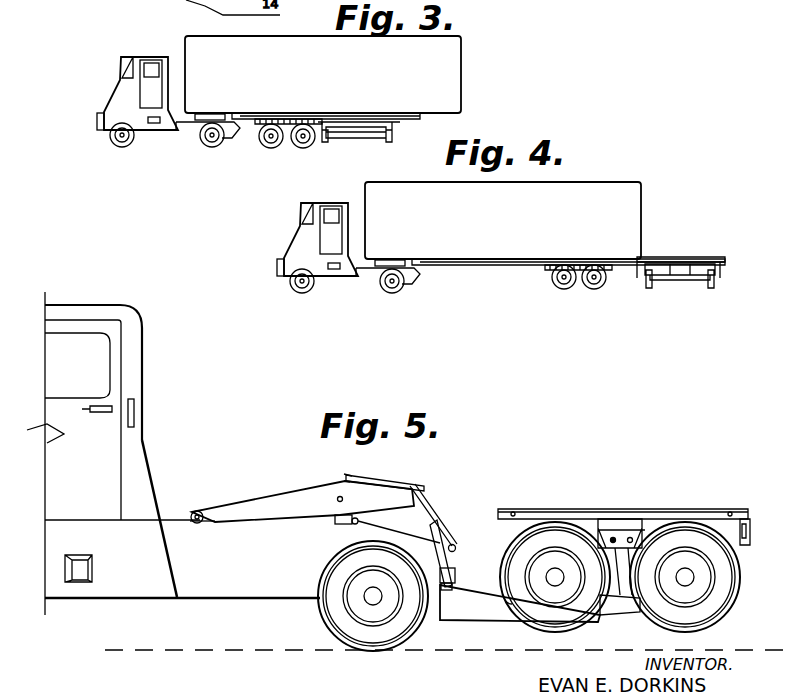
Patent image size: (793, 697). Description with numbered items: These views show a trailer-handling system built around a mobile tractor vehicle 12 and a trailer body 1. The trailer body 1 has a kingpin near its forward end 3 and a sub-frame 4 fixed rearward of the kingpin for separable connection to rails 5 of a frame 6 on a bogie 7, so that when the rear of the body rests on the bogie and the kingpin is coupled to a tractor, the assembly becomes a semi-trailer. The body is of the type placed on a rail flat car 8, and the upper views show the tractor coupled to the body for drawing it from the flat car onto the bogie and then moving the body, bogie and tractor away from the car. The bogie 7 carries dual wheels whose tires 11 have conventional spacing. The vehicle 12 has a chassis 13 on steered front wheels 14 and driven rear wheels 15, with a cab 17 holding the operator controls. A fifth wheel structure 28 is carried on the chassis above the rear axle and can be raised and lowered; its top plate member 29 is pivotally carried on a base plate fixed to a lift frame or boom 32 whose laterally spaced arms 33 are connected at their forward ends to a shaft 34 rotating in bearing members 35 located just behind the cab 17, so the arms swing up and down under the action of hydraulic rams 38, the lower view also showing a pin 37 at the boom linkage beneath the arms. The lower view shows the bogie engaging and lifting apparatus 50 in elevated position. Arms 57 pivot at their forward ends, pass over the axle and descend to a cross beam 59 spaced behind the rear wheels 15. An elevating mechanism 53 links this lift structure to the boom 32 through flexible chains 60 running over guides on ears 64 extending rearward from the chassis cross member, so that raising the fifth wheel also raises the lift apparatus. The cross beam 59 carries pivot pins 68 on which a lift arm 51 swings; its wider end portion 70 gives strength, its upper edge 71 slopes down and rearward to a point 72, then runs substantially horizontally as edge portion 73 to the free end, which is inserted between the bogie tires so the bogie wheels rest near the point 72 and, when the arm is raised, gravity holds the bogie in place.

In FIG. 3, the trailer body 1 is at (462, 62).
In FIG. 4, the trailer body 1 is at (662, 170).
In FIG. 3, the forward end 3 is at (185, 52).
In FIG. 4, the forward end 3 is at (486, 214).
In FIG. 3, the sub-frame 4 is at (248, 112).
In FIG. 4, the sub-frame 4 is at (478, 259).
In FIG. 5, the rails 5 is at (586, 508).
In FIG. 3, the frame 6 is at (292, 118).
In FIG. 4, the frame 6 is at (584, 264).
In FIG. 5, the frame 6 is at (632, 520).
In FIG. 3, the bogie 7 is at (271, 148).
In FIG. 4, the bogie 7 is at (568, 290).
In FIG. 5, the bogie 7 is at (738, 508).
In FIG. 3, the rail flat car 8 is at (394, 130).
In FIG. 4, the rail flat car 8 is at (703, 257).
In FIG. 3, the tires 11 is at (302, 148).
In FIG. 4, the tires 11 is at (606, 283).
In FIG. 5, the tires 11 is at (720, 620).
In FIG. 3, the mobile tractor vehicle 12 is at (117, 97).
In FIG. 4, the mobile tractor vehicle 12 is at (275, 248).
In FIG. 5, the mobile tractor vehicle 12 is at (143, 442).
In FIG. 3, the chassis 13 is at (184, 132).
In FIG. 4, the chassis 13 is at (352, 288).
In FIG. 5, the chassis 13 is at (252, 600).
In FIG. 3, the front wheels 14 is at (122, 148).
In FIG. 4, the front wheels 14 is at (297, 292).
In FIG. 3, the rear wheels 15 is at (213, 148).
In FIG. 4, the rear wheels 15 is at (396, 288).
In FIG. 5, the rear wheels 15 is at (378, 656).
In FIG. 3, the cab 17 is at (134, 52).
In FIG. 4, the cab 17 is at (321, 224).
In FIG. 5, the cab 17 is at (135, 305).
In FIG. 3, the fifth wheel structure 28 is at (214, 113).
In FIG. 4, the fifth wheel structure 28 is at (396, 245).
In FIG. 5, the fifth wheel structure 28 is at (412, 484).
In FIG. 5, the top plate member 29 is at (360, 476).
In FIG. 5, the lift frame or boom 32 is at (305, 486).
In FIG. 5, the arms 33 is at (244, 504).
In FIG. 5, the shaft 34 is at (192, 514).
In FIG. 5, the bearing members 35 is at (212, 522).
In FIG. 5, the link pin 37 is at (354, 525).
In FIG. 5, the hydraulic rams 38 is at (330, 521).
In FIG. 5, the bogie engaging and lifting apparatus 50 is at (472, 590).
In FIG. 5, the lift arm 51 is at (600, 617).
In FIG. 5, the elevating mechanism 53 is at (452, 530).
In FIG. 5, the arms 57 is at (408, 548).
In FIG. 5, the cross beam 59 is at (438, 536).
In FIG. 5, the chains 60 is at (430, 504).
In FIG. 5, the ears 64 is at (456, 548).
In FIG. 5, the pivot pins 68 is at (446, 586).
In FIG. 5, the end portions 70 is at (445, 621).
In FIG. 5, the upper edge 71 is at (500, 598).
In FIG. 5, the point 72 is at (512, 604).
In FIG. 5, the edge portion 73 is at (632, 580).